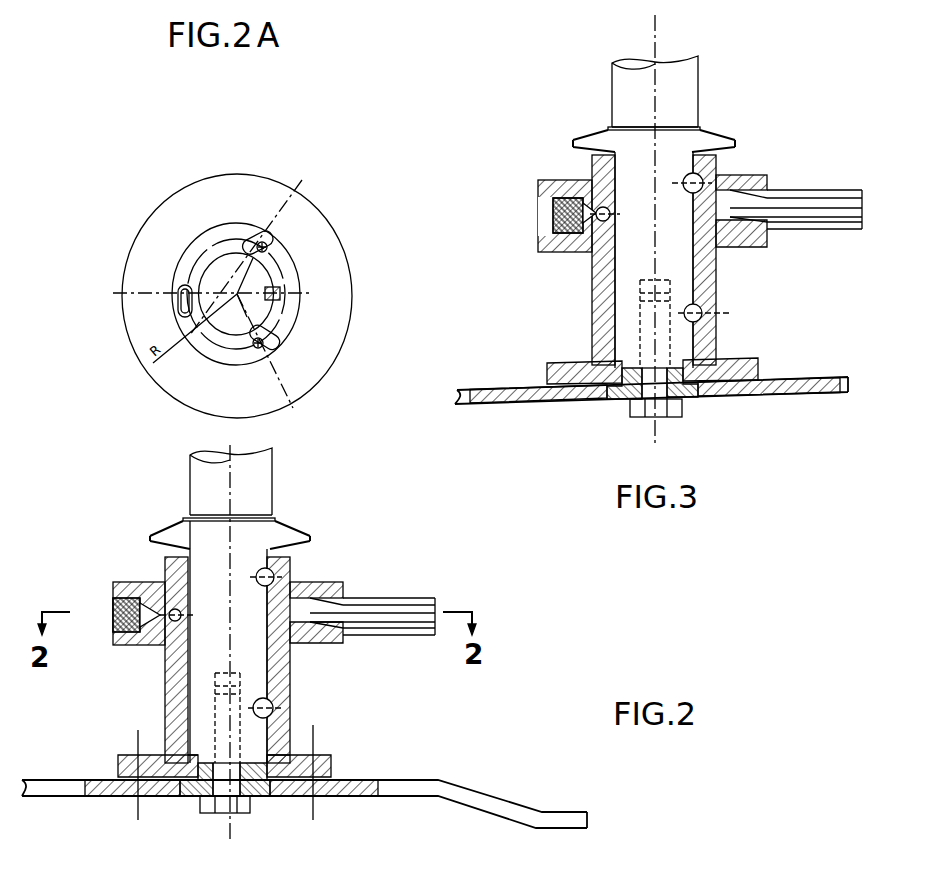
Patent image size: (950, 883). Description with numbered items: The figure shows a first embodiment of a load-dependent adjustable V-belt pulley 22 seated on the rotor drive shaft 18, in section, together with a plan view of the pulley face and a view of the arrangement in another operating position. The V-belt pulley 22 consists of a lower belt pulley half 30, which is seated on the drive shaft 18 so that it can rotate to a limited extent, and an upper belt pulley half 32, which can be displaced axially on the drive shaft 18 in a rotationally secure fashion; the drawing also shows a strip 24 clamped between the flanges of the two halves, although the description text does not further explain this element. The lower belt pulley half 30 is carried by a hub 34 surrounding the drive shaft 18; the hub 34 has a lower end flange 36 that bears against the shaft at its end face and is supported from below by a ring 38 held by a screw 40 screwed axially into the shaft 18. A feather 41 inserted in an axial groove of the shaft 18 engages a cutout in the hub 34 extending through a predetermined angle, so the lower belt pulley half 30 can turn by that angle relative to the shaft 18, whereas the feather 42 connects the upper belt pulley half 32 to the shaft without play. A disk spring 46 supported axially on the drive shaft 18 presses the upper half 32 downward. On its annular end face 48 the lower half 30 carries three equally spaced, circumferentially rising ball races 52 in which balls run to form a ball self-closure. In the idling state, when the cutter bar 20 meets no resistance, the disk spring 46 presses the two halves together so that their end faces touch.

In FIG. 2, the drive shaft 18 is at (255, 502).
In FIG. 2, the cutter bar 20 is at (448, 790).
In FIG. 2, the V-belt pulley 22 is at (366, 553).
In FIG. 3, the V-belt pulley 22 is at (760, 163).
In FIG. 2, the strip / blade 24 is at (418, 611).
In FIG. 3, the strip / blade 24 is at (845, 211).
In FIG. 2, the belt pulley half 30 is at (327, 648).
In FIG. 2, the belt pulley half 32 is at (338, 582).
In FIG. 2, the hub 34 is at (166, 676).
In FIG. 2, the lower end flange 36 is at (273, 785).
In FIG. 2, the ring 38 is at (250, 813).
In FIG. 2, the screw 40 is at (200, 785).
In FIG. 2, the feather 41 is at (268, 712).
In FIG. 2A, the feather 42 is at (278, 290).
In FIG. 2, the feather 42 is at (268, 574).
In FIG. 2, the disk spring 46 is at (152, 537).
In FIG. 2A, the annular end face 48 is at (213, 242).
In FIG. 2A, the ball races 52 is at (172, 290).